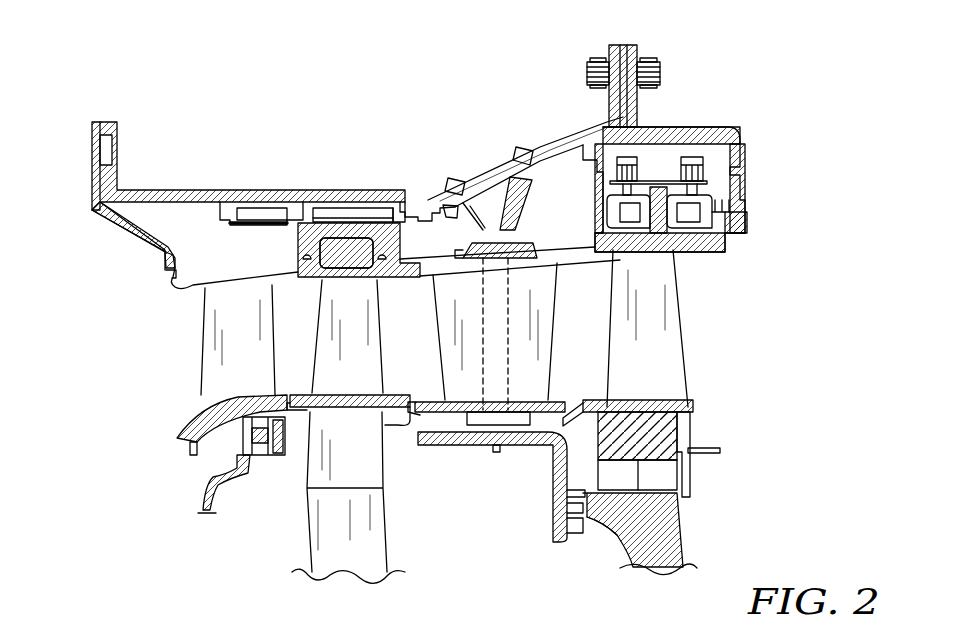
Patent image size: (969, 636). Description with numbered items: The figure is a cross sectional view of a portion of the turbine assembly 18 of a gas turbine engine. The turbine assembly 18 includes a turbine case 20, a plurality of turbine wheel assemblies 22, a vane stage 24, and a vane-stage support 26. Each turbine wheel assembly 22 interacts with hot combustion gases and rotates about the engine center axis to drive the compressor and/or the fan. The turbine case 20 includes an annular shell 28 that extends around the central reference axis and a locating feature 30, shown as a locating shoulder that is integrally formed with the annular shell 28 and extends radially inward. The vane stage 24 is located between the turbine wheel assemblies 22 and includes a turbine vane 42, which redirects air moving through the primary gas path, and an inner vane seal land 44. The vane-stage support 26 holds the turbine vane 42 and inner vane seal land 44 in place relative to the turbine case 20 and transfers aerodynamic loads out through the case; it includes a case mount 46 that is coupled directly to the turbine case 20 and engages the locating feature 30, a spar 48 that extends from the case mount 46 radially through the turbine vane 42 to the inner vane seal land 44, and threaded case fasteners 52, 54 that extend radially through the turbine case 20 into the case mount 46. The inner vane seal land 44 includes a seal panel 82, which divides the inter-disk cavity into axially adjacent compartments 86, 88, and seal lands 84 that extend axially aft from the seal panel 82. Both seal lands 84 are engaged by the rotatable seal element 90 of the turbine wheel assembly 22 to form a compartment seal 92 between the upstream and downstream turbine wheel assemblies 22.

The turbine assembly 18 is at (130, 108).
The turbine case 20 is at (482, 160).
The turbine wheel assemblies 22 is at (278, 491).
The vane stage 24 is at (417, 445).
The vane-stage support 26 is at (573, 188).
The annular shell 28 is at (497, 160).
The locating feature 30 is at (428, 210).
The turbine vane 42 is at (562, 320).
The inner vane seal land 44 is at (509, 494).
The case mount 46 is at (531, 219).
The spar 48 is at (476, 330).
The threaded case fastener 52 is at (448, 178).
The threaded case fastener 54 is at (520, 148).
The seal panel 82 is at (467, 447).
The seal lands 84 is at (622, 507).
The compartment 86 is at (520, 512).
The compartment 88 is at (577, 463).
The rotatable seal element 90 is at (565, 542).
The compartment seal 92 is at (598, 535).